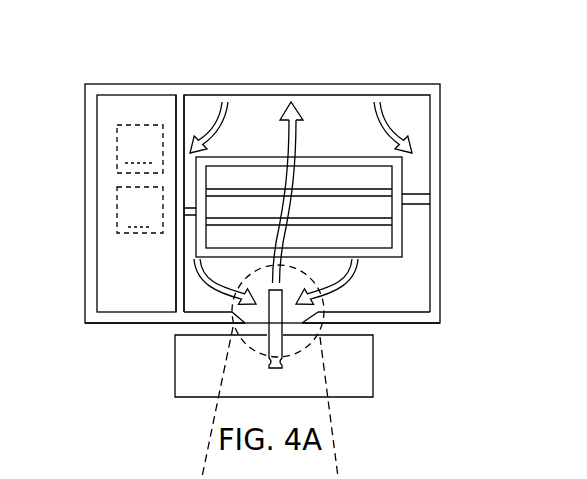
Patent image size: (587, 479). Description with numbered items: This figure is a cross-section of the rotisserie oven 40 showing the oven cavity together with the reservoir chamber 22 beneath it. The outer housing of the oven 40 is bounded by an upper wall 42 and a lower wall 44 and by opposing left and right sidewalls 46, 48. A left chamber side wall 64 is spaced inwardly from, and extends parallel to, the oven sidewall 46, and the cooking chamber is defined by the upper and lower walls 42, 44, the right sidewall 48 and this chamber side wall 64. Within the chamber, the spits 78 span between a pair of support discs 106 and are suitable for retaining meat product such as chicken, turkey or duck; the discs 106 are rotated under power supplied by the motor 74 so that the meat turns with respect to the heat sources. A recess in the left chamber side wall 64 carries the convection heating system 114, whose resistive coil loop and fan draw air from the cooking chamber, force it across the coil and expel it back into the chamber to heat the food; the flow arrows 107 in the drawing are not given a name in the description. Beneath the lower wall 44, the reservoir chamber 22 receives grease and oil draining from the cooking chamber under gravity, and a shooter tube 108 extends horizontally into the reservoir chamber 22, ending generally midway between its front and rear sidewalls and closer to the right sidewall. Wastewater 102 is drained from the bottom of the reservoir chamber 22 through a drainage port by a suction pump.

The rotisserie oven 40 is at (60, 60).
The upper wall 42 is at (373, 85).
The lower wall 44 is at (392, 324).
The left sidewall 46 is at (85, 263).
The right sidewall 48 is at (440, 252).
The left chamber side wall 64 is at (188, 115).
The motor 74 is at (140, 210).
The spits 78 is at (318, 157).
The wastewater 102 is at (276, 287).
The support discs 106 is at (395, 187).
The airflow 107 is at (285, 148).
The shooter tube 108 is at (233, 333).
The convection heating system 114 is at (141, 149).
The reservoir chamber 22 is at (347, 385).